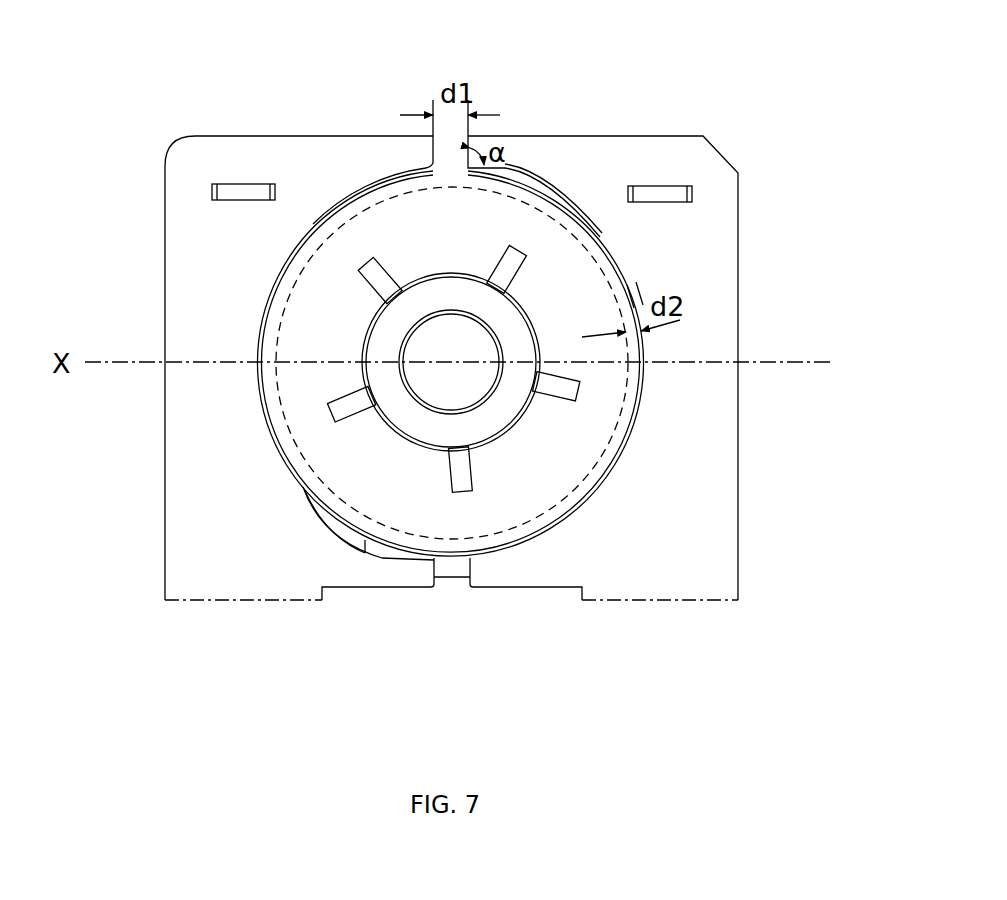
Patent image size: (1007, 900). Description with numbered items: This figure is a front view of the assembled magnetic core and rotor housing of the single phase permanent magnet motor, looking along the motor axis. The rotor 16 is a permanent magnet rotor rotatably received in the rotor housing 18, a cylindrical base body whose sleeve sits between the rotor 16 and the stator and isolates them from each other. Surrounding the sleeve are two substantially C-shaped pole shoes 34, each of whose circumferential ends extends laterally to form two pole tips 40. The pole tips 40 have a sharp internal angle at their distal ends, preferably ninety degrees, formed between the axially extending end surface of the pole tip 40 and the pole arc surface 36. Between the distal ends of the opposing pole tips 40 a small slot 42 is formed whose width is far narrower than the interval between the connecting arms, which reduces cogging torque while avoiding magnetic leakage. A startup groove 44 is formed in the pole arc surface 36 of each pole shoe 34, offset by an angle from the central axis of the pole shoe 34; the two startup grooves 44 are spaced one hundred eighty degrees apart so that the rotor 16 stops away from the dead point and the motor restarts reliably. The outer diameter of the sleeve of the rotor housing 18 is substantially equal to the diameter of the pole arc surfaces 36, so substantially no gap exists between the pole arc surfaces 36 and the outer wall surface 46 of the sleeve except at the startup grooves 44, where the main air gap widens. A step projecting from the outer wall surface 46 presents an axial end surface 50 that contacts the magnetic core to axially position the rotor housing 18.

The rotor 16 is at (620, 410).
The rotor housing 18 is at (300, 337).
The pole shoe 34 is at (228, 522).
The pole arc surface 36 is at (618, 268).
The pole tip 40 is at (393, 155).
The slot 42 is at (452, 580).
The startup groove 44 is at (547, 175).
The outer wall surface 46 is at (268, 423).
The axial end surface 50 is at (452, 162).